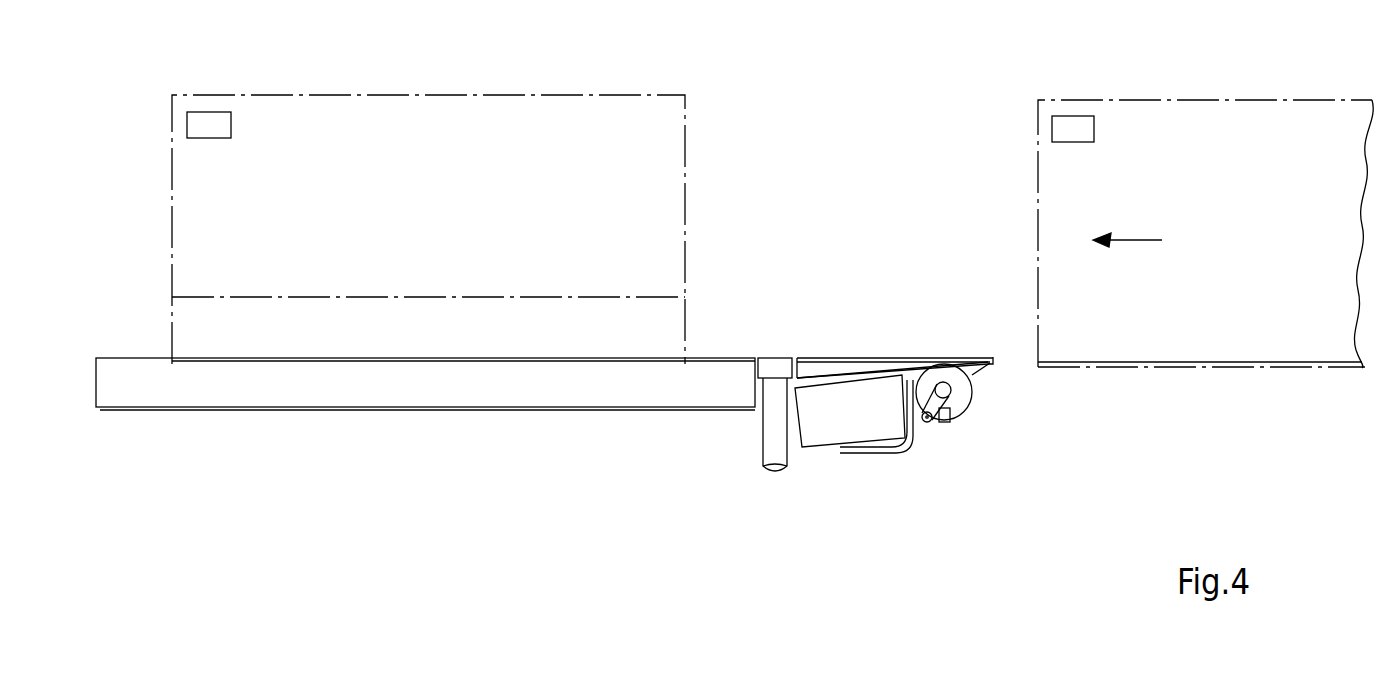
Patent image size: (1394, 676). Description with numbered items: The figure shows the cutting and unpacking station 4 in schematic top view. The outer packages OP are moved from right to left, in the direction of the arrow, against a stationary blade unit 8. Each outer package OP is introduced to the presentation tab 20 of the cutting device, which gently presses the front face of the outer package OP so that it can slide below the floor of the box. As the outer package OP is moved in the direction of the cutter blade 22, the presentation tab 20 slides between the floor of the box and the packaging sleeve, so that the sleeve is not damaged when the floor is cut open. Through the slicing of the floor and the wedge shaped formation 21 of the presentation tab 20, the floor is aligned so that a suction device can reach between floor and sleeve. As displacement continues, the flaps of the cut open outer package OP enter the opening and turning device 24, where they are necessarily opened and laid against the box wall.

The cutting and unpacking station 4 is at (447, 497).
The blade unit 8 is at (875, 465).
The presentation tab 20 is at (988, 355).
The wedge shaped formation 21 is at (838, 370).
The cutter blade 22 is at (770, 368).
The opening and turning device 24 is at (655, 392).
The outer package OP is at (503, 112).